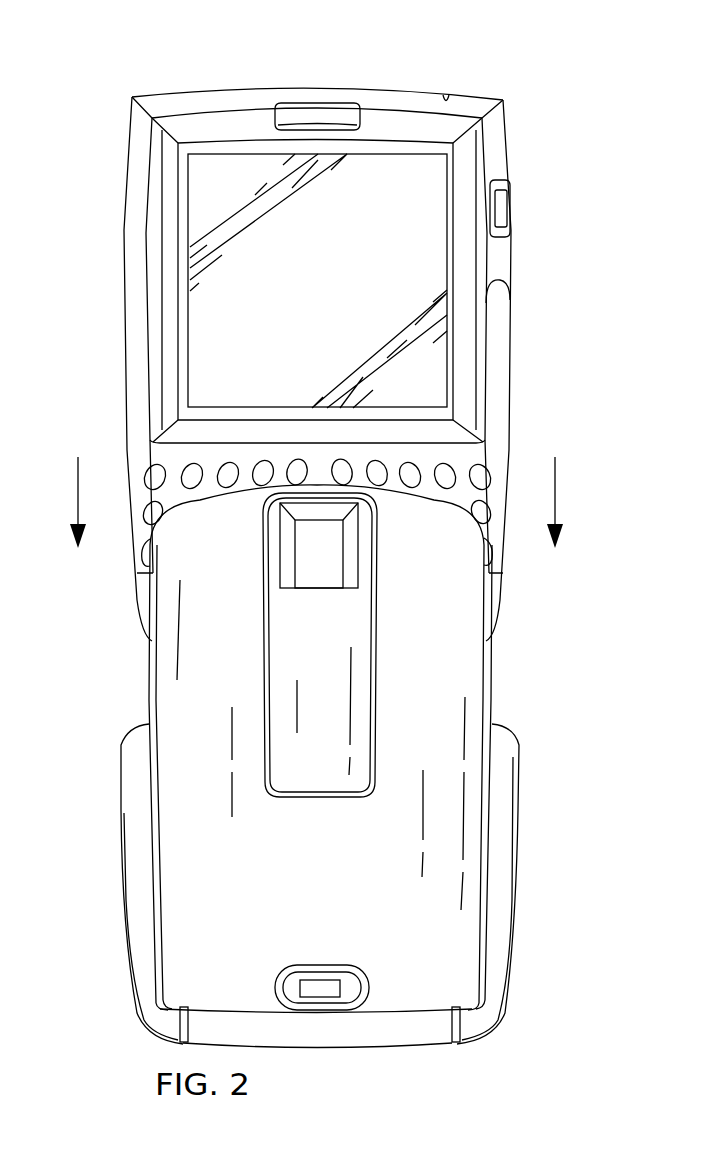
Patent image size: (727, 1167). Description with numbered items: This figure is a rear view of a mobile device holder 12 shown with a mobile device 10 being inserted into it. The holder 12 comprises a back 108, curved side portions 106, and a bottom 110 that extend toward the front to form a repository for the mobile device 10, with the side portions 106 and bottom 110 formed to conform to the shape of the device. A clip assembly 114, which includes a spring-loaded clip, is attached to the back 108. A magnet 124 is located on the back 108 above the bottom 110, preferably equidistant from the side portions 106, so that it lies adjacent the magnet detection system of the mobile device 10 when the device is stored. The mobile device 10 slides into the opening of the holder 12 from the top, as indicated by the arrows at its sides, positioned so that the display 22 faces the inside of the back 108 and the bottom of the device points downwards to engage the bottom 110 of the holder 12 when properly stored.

The mobile device 10 is at (279, 323).
The display 22 is at (247, 280).
The mobile device holder 12 is at (317, 803).
The back 108 is at (492, 667).
The side portions 106 is at (125, 919).
The bottom 110 is at (318, 1050).
The clip assembly 114 is at (322, 788).
The magnet 124 is at (281, 970).